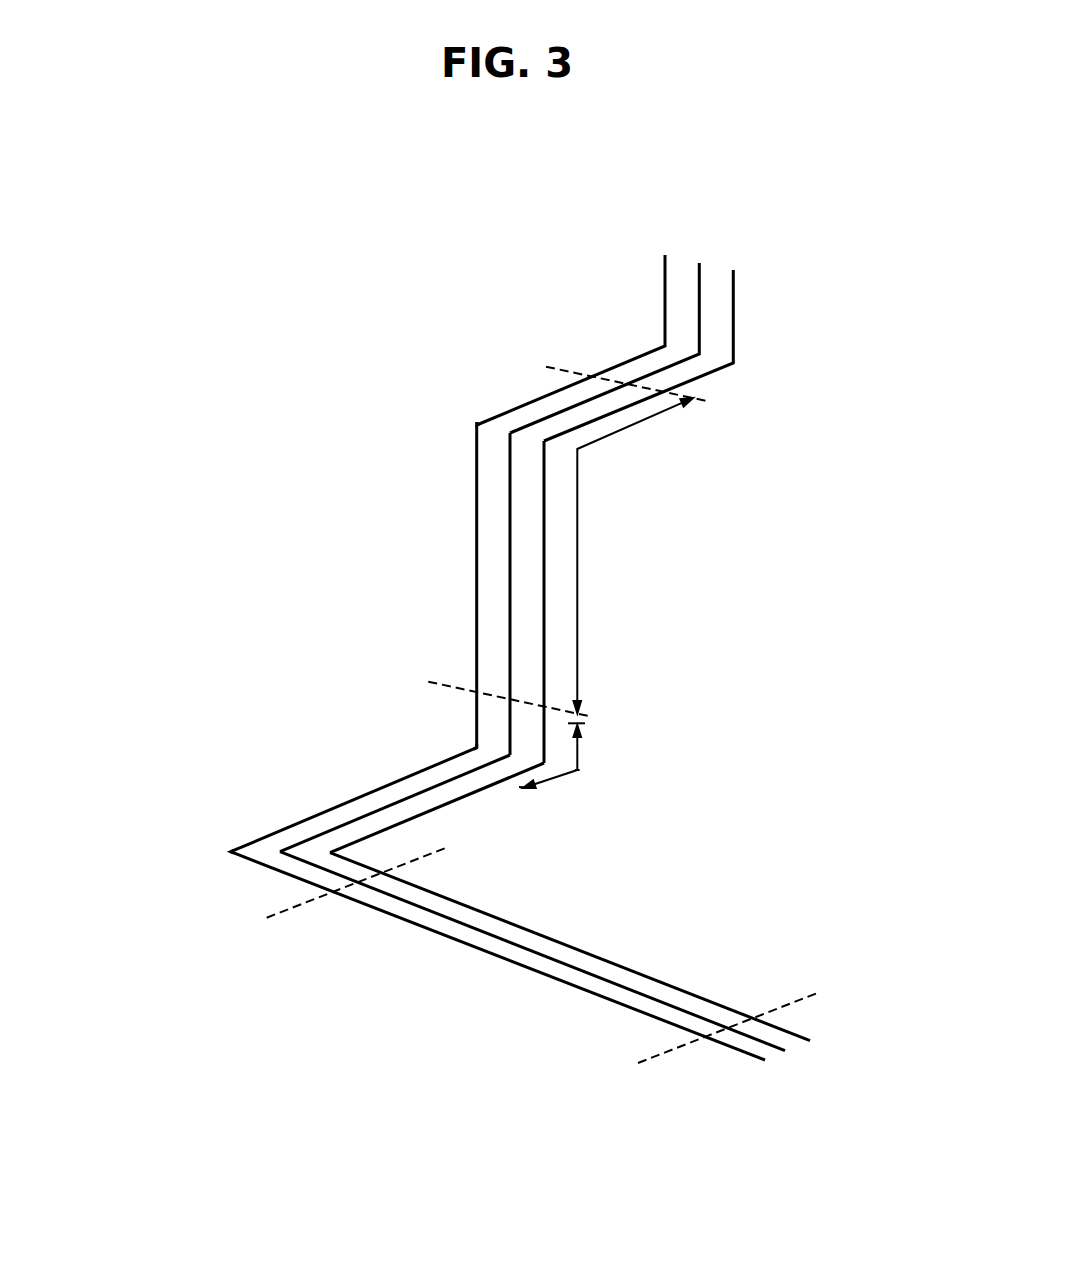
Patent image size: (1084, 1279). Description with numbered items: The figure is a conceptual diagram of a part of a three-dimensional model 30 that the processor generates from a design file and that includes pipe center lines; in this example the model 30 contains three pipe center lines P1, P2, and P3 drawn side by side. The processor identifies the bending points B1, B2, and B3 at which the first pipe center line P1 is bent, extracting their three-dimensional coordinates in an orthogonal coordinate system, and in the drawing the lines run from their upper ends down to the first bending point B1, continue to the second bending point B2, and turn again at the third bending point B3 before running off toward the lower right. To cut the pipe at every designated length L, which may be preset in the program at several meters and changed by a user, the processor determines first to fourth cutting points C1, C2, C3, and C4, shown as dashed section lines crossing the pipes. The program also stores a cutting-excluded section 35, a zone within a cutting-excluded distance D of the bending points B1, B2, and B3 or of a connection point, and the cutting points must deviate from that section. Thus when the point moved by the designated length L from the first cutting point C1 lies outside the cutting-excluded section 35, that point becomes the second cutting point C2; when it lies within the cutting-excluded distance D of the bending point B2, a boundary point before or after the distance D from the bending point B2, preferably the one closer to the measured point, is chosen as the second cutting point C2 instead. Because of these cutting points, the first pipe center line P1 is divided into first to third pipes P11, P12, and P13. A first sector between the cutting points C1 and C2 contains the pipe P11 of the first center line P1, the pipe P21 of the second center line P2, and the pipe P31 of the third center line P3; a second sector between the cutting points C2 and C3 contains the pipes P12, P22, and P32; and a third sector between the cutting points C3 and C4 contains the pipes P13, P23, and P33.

The 3D model 30 is at (352, 266).
The first pipe center line P1 is at (498, 640).
The second pipe center line P2 is at (532, 638).
The third pipe center line P3 is at (536, 646).
The first pipe P11 is at (464, 489).
The second pipe P12 is at (413, 761).
The third pipe P13 is at (460, 954).
The pipe P21 is at (497, 542).
The pipe P22 is at (379, 797).
The pipe P23 is at (519, 958).
The pipe P31 is at (531, 603).
The pipe P32 is at (344, 834).
The pipe P33 is at (593, 968).
The bending point B1 is at (477, 425).
The bending point B2 is at (477, 748).
The bending point B3 is at (231, 852).
The first cutting point C1 is at (568, 372).
The second cutting point C2 is at (455, 686).
The third cutting point C3 is at (303, 904).
The fourth cutting point C4 is at (677, 1049).
The designated length L is at (634, 555).
The cutting-excluded distance D is at (559, 767).
The cutting-excluded section 35 is at (577, 770).